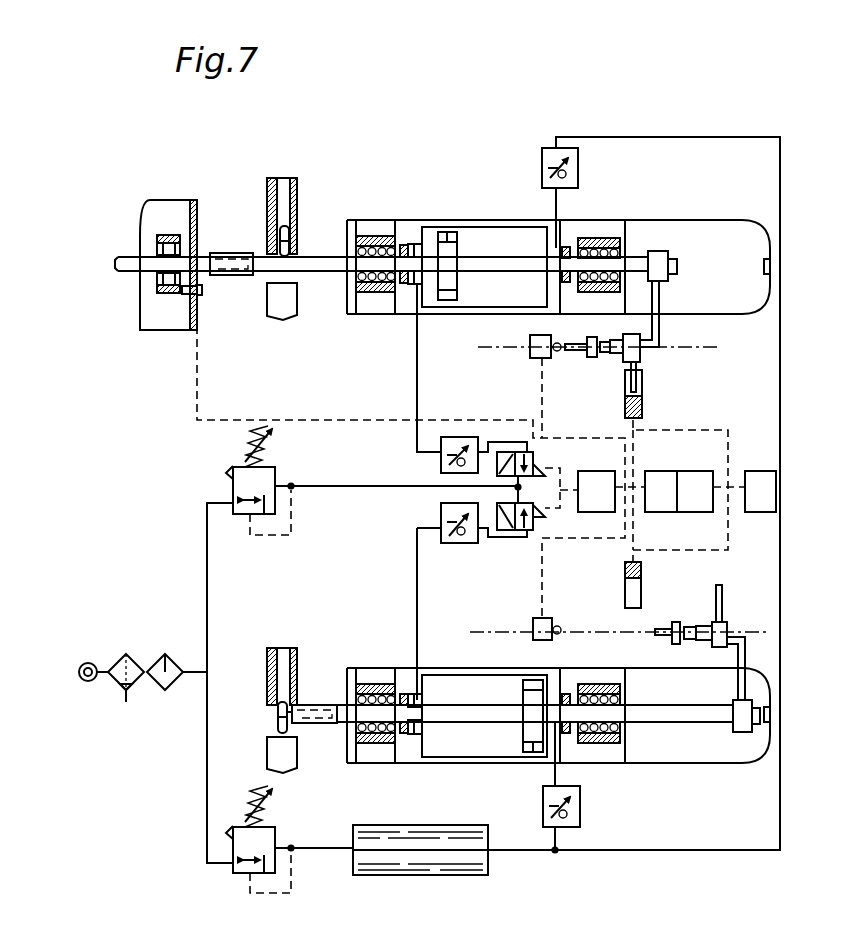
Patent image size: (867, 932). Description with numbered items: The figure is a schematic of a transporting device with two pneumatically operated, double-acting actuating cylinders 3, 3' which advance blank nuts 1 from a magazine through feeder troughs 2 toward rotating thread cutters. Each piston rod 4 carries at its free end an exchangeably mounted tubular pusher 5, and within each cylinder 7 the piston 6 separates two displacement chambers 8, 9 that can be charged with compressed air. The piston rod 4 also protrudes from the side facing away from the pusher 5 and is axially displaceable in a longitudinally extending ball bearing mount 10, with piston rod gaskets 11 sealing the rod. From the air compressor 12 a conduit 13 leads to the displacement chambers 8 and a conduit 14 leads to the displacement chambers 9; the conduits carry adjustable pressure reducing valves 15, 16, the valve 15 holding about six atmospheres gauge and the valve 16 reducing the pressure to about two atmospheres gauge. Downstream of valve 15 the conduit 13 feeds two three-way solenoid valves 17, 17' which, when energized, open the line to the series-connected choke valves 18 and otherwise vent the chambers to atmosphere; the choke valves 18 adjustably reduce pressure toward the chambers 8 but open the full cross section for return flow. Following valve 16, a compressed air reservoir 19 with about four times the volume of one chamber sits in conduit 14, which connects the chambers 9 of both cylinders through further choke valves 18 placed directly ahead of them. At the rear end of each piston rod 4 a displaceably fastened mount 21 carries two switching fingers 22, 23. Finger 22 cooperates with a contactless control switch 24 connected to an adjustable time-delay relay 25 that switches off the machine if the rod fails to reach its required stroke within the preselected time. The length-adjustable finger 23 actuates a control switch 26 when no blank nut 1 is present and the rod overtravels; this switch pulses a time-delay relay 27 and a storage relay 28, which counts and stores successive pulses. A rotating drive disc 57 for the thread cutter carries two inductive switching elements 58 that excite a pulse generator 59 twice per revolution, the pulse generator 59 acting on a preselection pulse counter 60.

The blank nut 1 is at (278, 240).
The feeder trough 2 is at (285, 195).
The actuating cylinder 3 is at (486, 243).
The actuating cylinder 3' is at (486, 740).
The piston rod 4 is at (487, 262).
The tubular pusher 5 is at (230, 254).
The piston 6 is at (448, 233).
The cylinder 7 is at (477, 225).
The displacement chamber 8 is at (422, 235).
The displacement chamber 9 is at (520, 238).
The ball bearing mount 10 is at (364, 240).
The piston rod gasket 11 is at (352, 280).
The air compressor 12 is at (147, 694).
The conduit 13 is at (208, 573).
The conduit 14 is at (207, 782).
The pressure reducing valve 15 is at (237, 490).
The pressure reducing valve 16 is at (275, 840).
The three-way solenoid valve 17 is at (521, 433).
The three-way solenoid valve 17' is at (520, 541).
The choke valve 18 is at (548, 152).
The compressed air reservoir 19 is at (440, 860).
The mount 21 is at (657, 250).
The switching finger 22 is at (643, 384).
The switching finger 23 is at (575, 351).
The control switch 24 is at (643, 405).
The time-delay relay 25 is at (757, 484).
The control switch 26 is at (530, 345).
The time-delay relay 27 is at (661, 484).
The storage relay 28 is at (690, 485).
The drive disc 57 is at (154, 295).
The switching element 58 is at (178, 300).
The pulse generator 59 is at (203, 300).
The preselection pulse counter 60 is at (597, 500).